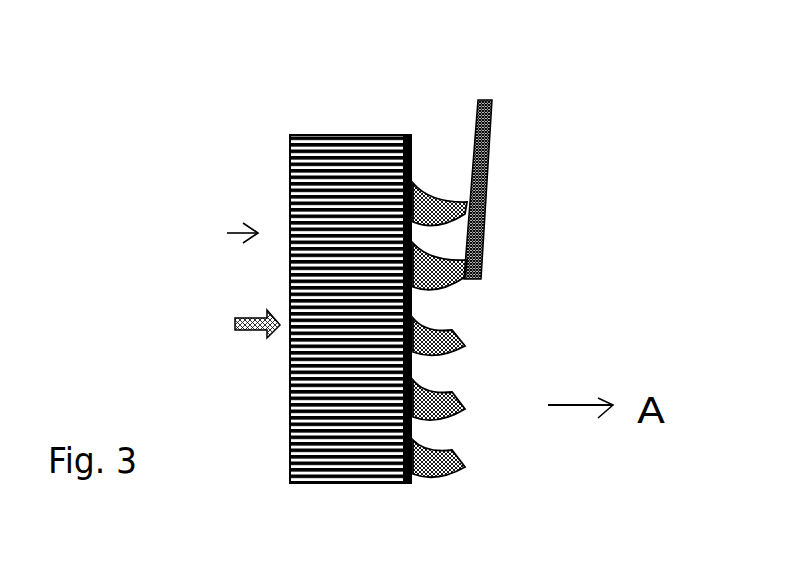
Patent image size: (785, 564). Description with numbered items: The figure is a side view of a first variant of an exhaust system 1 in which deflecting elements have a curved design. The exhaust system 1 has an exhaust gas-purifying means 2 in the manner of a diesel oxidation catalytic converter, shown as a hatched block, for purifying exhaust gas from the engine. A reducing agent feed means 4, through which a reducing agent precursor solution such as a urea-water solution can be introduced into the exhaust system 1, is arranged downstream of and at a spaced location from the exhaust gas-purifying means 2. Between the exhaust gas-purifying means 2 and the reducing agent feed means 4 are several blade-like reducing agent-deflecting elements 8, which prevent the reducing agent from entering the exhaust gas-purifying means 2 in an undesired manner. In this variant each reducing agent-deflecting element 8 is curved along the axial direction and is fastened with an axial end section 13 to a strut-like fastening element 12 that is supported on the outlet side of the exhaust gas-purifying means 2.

The exhaust system 1 is at (518, 287).
The exhaust gas-purifying means 2 is at (369, 137).
The reducing agent feed means 4 is at (492, 119).
The reducing agent-deflecting element 8 is at (442, 197).
The fastening element 12 is at (415, 312).
The axial end section 13 is at (522, 294).